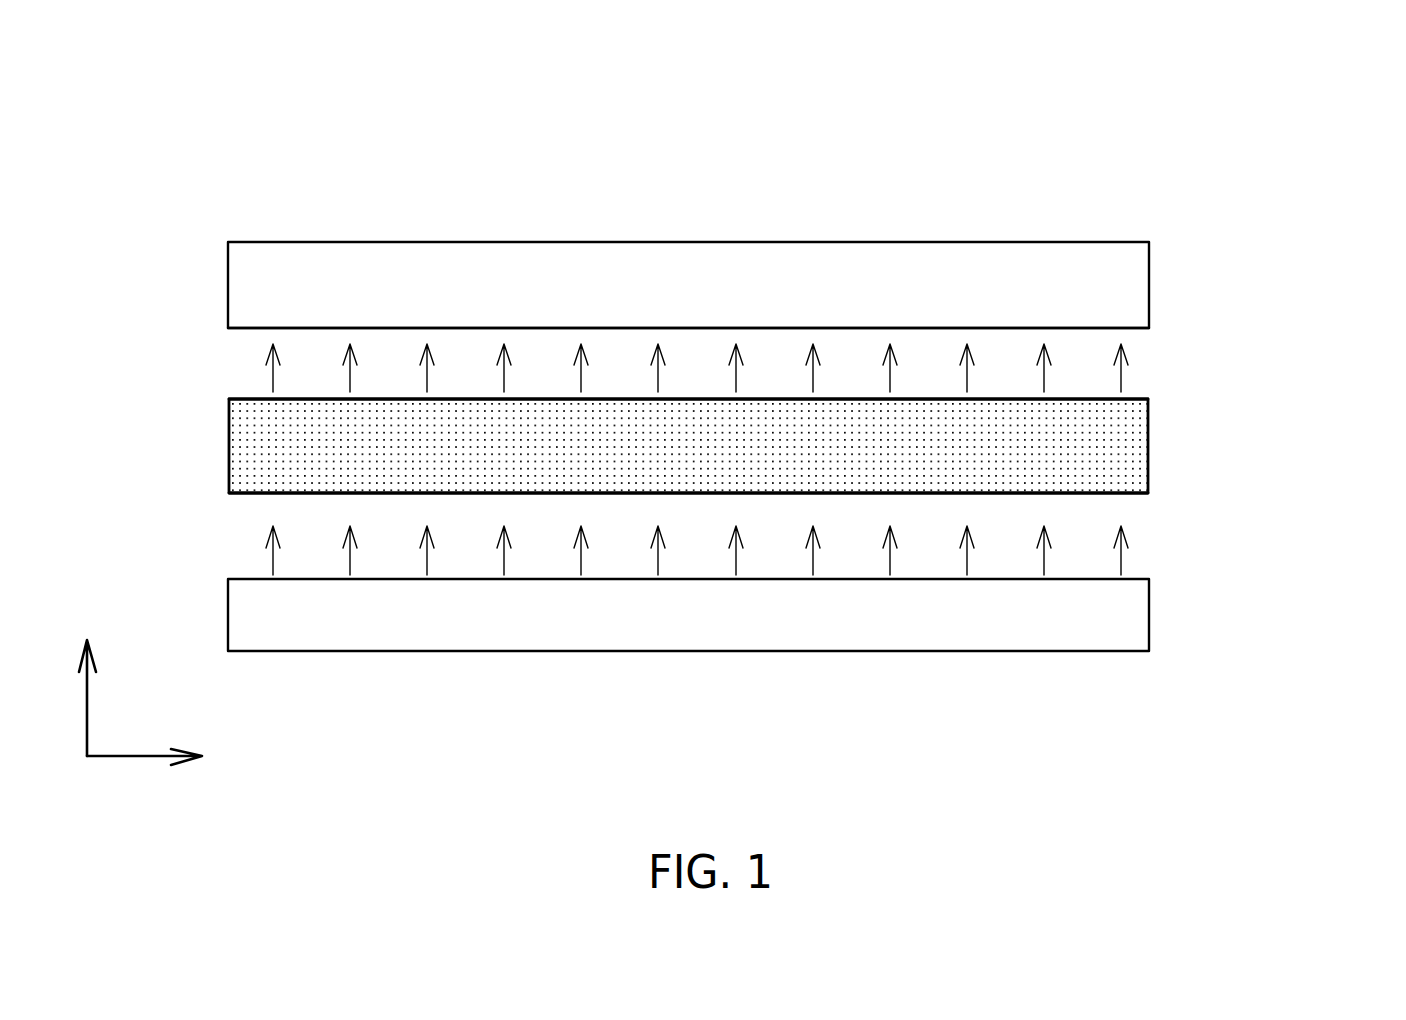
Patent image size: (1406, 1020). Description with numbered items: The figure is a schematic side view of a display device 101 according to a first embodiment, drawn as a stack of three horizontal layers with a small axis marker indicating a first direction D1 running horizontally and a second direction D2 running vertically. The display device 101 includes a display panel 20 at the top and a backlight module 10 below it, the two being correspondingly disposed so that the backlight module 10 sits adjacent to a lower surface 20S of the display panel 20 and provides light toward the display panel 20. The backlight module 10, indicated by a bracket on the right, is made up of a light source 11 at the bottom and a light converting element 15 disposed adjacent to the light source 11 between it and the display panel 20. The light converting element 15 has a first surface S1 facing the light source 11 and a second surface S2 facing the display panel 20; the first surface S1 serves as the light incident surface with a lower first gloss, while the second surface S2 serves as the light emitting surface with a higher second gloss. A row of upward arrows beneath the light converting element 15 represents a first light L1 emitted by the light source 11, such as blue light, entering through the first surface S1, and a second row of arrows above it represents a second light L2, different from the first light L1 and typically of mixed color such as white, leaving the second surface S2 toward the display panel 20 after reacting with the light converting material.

The display device 101 is at (1137, 130).
The display panel 20 is at (1126, 280).
The lower surface 20S is at (1130, 329).
The backlight module 10 is at (1337, 398).
The light converting element 15 is at (1128, 440).
The second surface S2 is at (1093, 391).
The first surface S1 is at (1085, 494).
The light source 11 is at (1128, 615).
The second light L2 is at (273, 375).
The first light L1 is at (273, 557).
The first direction D1 is at (164, 759).
The second direction D2 is at (82, 682).